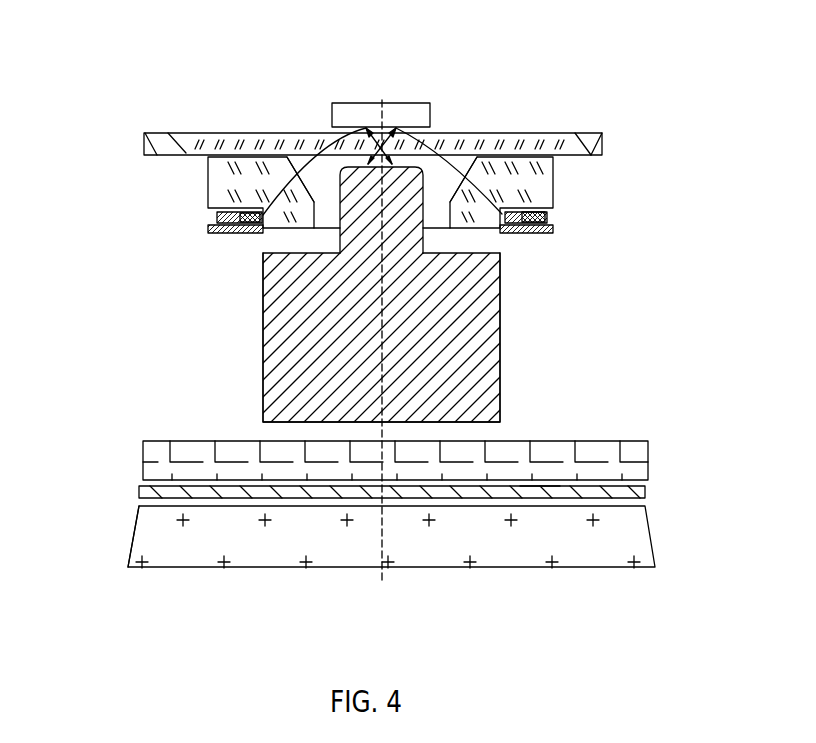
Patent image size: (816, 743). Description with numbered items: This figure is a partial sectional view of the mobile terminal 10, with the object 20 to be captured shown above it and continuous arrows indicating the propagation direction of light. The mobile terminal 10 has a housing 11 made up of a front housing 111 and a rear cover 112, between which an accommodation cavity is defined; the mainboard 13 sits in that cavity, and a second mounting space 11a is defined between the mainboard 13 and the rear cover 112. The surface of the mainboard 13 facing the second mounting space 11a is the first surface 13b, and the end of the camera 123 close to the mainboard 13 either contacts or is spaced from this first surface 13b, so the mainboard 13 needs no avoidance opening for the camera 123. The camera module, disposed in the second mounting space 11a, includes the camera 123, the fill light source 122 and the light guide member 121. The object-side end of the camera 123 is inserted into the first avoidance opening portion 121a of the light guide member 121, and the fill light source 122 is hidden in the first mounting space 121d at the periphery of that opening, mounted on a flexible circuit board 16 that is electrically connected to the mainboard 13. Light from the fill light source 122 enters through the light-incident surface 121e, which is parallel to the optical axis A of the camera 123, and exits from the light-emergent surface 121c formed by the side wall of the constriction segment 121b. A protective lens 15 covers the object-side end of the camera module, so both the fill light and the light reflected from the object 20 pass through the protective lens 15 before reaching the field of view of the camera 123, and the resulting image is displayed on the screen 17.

The mobile terminal 10 is at (150, 584).
The housing 11 is at (598, 129).
The second mounting space 11a is at (198, 375).
The front housing 111 is at (540, 487).
The rear cover 112 is at (157, 133).
The light guide member 121 is at (523, 183).
The first avoidance opening portion 121a is at (505, 228).
The constriction segment 121b is at (474, 152).
The light-emergent surface 121c is at (293, 177).
The first mounting space 121d is at (198, 215).
The light-incident surface 121e is at (450, 228).
The fill light source 122 is at (548, 213).
The camera 123 is at (475, 400).
The mainboard 13 is at (320, 465).
The first surface 13b is at (523, 441).
The protective lens 15 is at (213, 133).
The flexible circuit board 16 is at (223, 235).
The screen 17 is at (255, 522).
The object to be captured 20 is at (405, 115).
The optical axis A is at (382, 578).